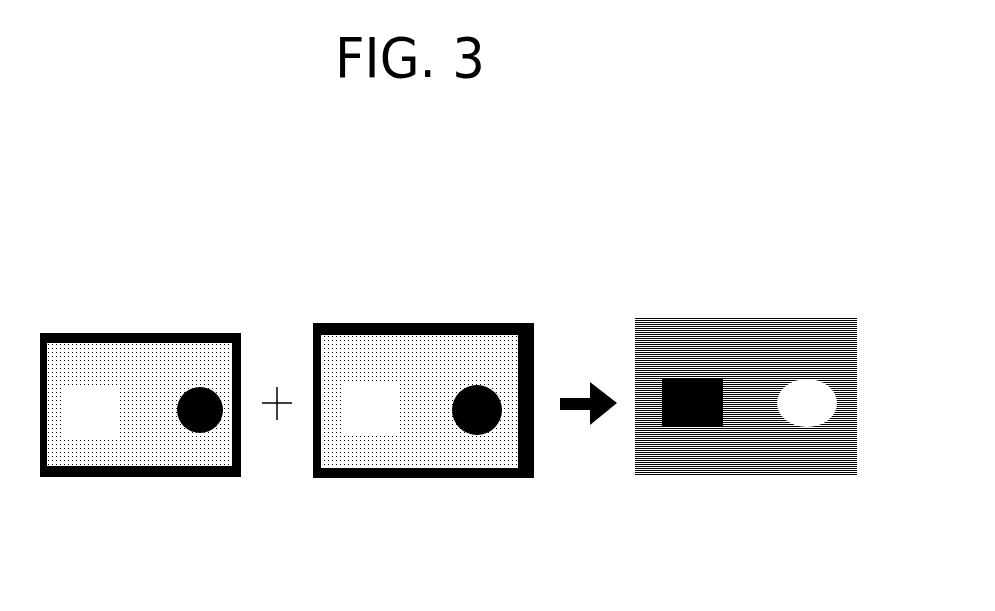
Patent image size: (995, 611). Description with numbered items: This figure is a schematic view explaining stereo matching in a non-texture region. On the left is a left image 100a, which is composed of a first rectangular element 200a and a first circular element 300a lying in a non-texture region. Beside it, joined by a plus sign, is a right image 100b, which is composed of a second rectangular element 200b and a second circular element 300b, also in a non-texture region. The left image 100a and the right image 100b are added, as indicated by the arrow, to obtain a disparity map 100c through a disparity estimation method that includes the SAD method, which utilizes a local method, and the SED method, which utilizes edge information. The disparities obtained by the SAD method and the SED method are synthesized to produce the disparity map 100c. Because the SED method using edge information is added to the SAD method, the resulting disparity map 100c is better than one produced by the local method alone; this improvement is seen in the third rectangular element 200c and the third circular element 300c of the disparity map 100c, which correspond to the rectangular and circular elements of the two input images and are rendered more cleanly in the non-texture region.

The left image 100a is at (208, 332).
The first rectangular element 200a is at (87, 427).
The first circular element 300a is at (193, 430).
The right image 100b is at (443, 324).
The second rectangular element 200b is at (372, 415).
The second circular element 300b is at (477, 430).
The disparity map 100c is at (788, 360).
The third rectangular element 200c is at (688, 417).
The third circular element 300c is at (807, 417).